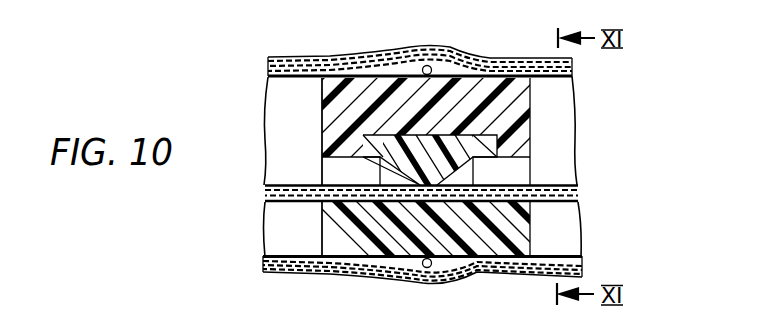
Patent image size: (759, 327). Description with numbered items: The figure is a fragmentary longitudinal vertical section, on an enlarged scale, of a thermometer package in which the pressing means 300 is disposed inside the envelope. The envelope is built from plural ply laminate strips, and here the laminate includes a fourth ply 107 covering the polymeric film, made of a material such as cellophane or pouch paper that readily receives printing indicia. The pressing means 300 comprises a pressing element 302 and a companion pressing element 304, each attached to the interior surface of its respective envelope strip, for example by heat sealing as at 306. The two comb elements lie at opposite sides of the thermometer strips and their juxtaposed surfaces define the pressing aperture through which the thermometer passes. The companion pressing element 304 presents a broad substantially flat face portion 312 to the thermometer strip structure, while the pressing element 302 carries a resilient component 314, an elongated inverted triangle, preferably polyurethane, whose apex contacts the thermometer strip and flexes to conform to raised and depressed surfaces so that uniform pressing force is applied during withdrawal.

The fourth ply 107 is at (460, 48).
The pressing means 300 is at (443, 165).
The pressing element 302 is at (520, 107).
The companion pressing element 304 is at (518, 232).
The heat seal 306 is at (339, 81).
The flat face portion 312 is at (342, 203).
The resilient component 314 is at (422, 135).